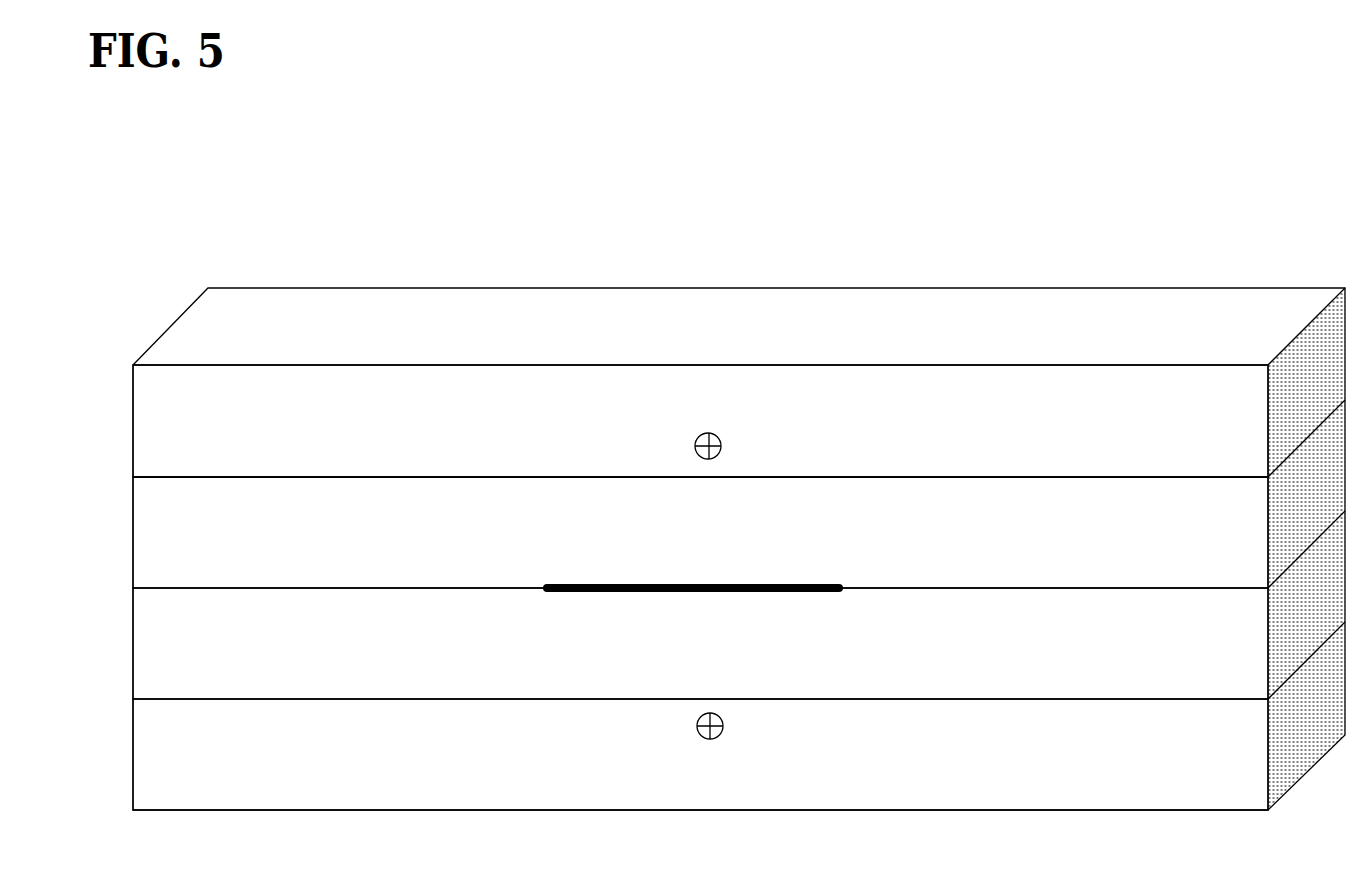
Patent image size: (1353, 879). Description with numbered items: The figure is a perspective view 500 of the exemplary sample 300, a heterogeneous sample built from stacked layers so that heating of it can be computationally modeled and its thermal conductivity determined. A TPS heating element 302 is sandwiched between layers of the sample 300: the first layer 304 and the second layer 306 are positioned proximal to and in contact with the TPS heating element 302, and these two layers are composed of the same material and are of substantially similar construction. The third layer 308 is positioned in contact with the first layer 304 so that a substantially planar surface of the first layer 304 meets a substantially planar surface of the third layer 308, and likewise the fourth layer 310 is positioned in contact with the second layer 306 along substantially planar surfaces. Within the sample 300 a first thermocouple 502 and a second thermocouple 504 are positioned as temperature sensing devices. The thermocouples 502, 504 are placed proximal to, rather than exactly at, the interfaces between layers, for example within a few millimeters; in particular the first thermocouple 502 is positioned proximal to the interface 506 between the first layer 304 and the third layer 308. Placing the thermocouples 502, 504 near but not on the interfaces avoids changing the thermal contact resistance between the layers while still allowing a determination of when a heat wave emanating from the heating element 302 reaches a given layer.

The perspective view 500 is at (258, 128).
The sample 300 is at (668, 288).
The TPS heating element 302 is at (597, 585).
The first layer 304 is at (133, 530).
The second layer 306 is at (133, 643).
The third layer 308 is at (133, 420).
The fourth layer 310 is at (133, 754).
The first thermocouple 502 is at (708, 432).
The second thermocouple 504 is at (707, 740).
The interface 506 is at (628, 462).